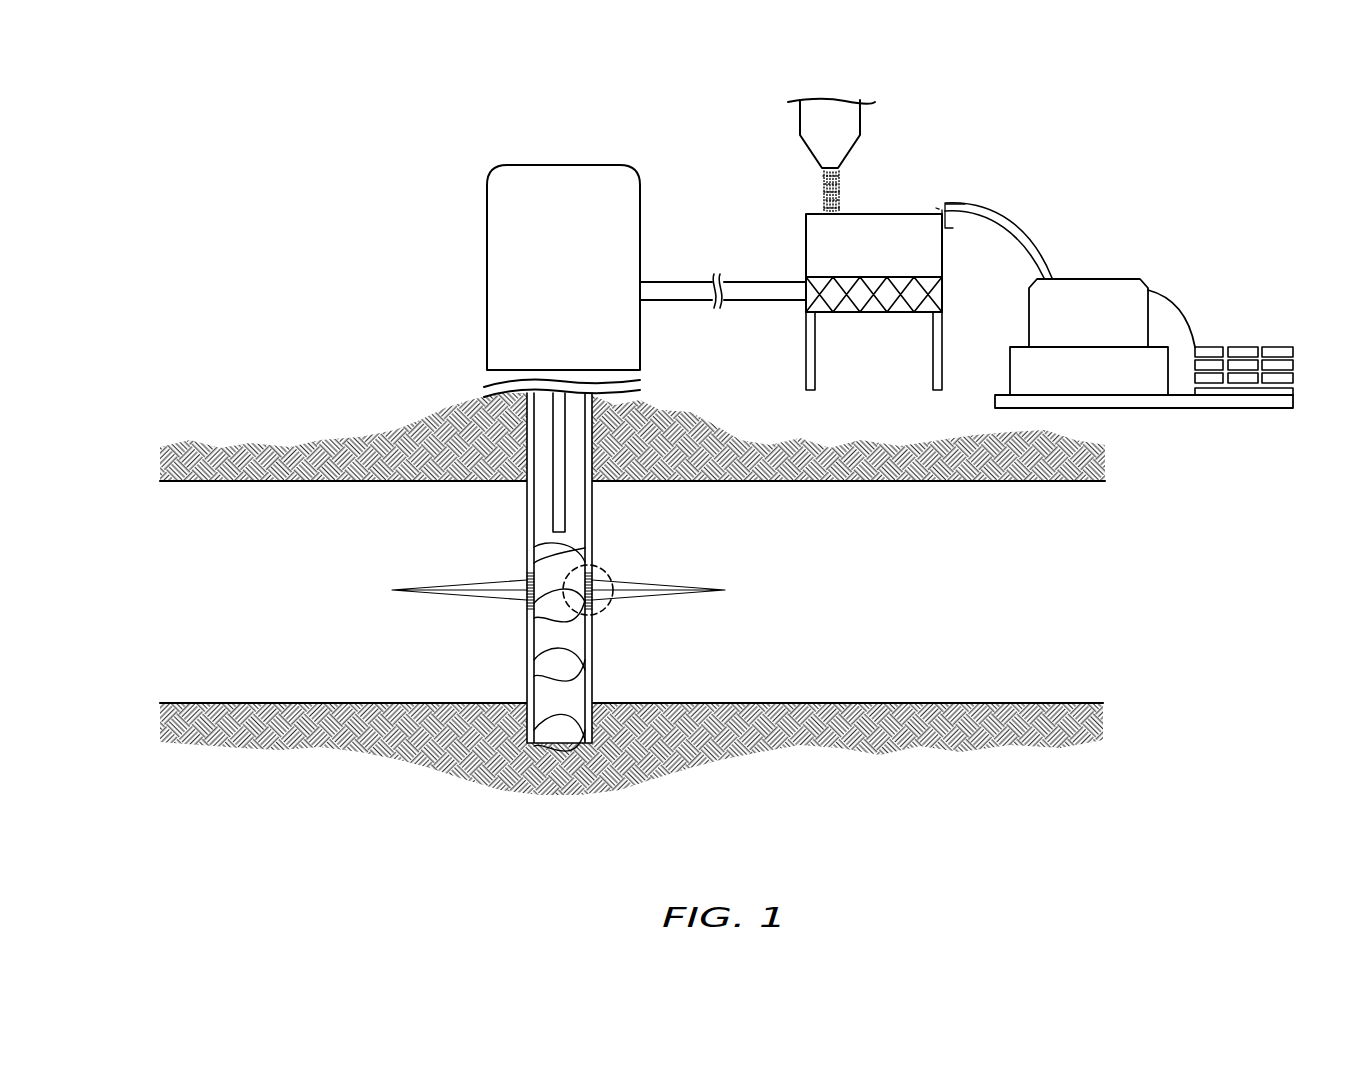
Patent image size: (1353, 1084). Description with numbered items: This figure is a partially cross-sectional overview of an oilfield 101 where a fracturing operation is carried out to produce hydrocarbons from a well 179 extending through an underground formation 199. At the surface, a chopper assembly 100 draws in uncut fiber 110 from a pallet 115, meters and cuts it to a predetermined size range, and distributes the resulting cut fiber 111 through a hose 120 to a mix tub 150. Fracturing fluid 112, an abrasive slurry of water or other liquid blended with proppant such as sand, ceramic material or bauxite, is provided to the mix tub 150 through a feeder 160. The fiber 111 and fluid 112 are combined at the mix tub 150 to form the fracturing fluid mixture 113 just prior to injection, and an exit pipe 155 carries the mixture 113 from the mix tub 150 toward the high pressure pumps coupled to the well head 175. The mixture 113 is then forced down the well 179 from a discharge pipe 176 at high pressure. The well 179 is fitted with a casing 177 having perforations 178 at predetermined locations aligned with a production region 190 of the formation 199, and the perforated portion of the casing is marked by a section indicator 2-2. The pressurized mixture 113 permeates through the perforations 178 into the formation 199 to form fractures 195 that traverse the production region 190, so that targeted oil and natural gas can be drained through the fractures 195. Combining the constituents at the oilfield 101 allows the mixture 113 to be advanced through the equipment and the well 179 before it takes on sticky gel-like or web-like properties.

The oilfield 101 is at (234, 172).
The well head 175 is at (569, 178).
The exit pipe 155 is at (755, 300).
The mix tub 150 is at (902, 172).
The cut fiber 111 is at (927, 205).
The feeder 160 is at (808, 125).
The fracturing fluid 112 is at (822, 185).
The hose 120 is at (1010, 218).
The chopper assembly 100 is at (1073, 284).
The uncut fiber 110 is at (1158, 298).
The pallet 115 is at (1242, 316).
The formation 199 is at (241, 408).
The production region 190 is at (952, 618).
The fracturing fluid mixture 113 is at (525, 568).
The casing 177 is at (531, 500).
The discharge pipe 176 is at (556, 483).
The well 179 is at (570, 645).
The perforations 178 is at (596, 572).
The fractures 195 is at (676, 590).
The section line 2-2 is at (605, 608).